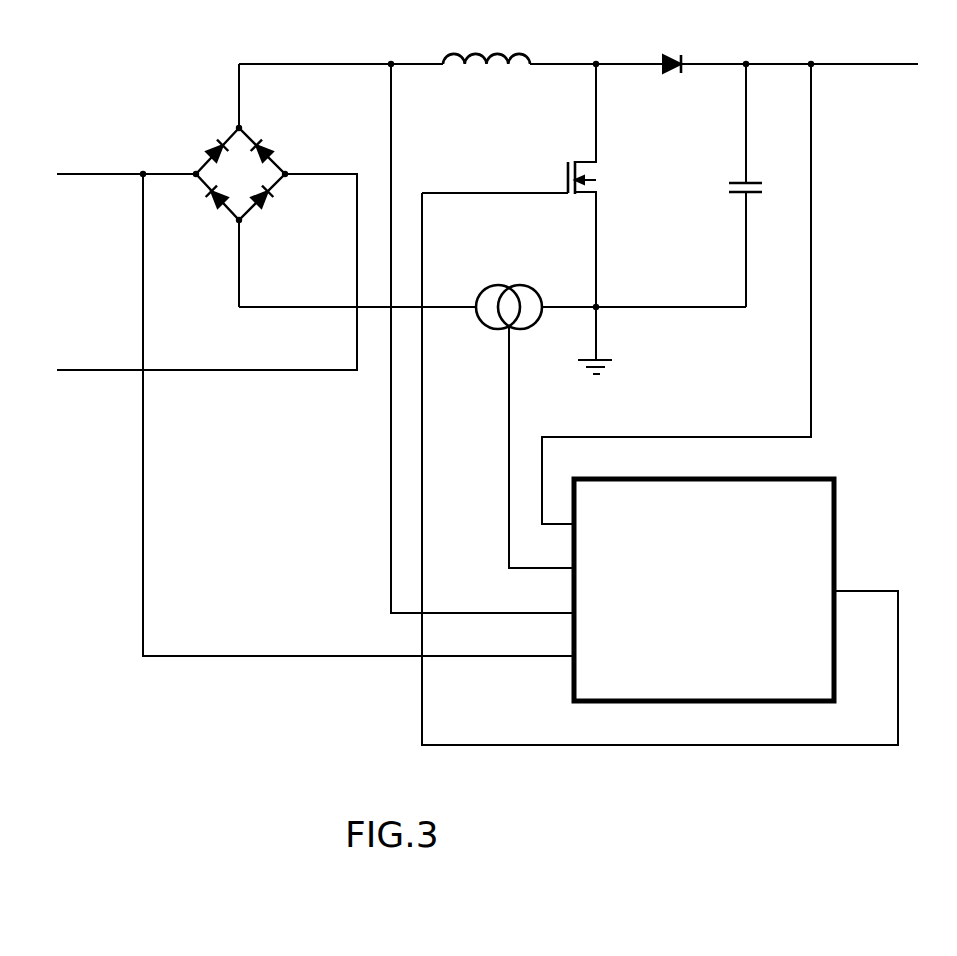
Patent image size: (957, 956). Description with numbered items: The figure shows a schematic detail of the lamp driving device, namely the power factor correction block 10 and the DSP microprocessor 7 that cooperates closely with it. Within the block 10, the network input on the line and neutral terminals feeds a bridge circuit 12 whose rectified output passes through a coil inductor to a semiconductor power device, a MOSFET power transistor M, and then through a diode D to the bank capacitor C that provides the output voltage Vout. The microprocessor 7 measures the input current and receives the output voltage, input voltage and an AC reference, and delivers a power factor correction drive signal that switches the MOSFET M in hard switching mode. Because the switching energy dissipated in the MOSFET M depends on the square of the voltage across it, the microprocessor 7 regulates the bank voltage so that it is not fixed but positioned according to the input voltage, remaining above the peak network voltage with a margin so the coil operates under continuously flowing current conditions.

The DSP microprocessor 7 is at (762, 662).
The power factor correction block 10 is at (793, 254).
The bridge circuit 12 is at (200, 122).